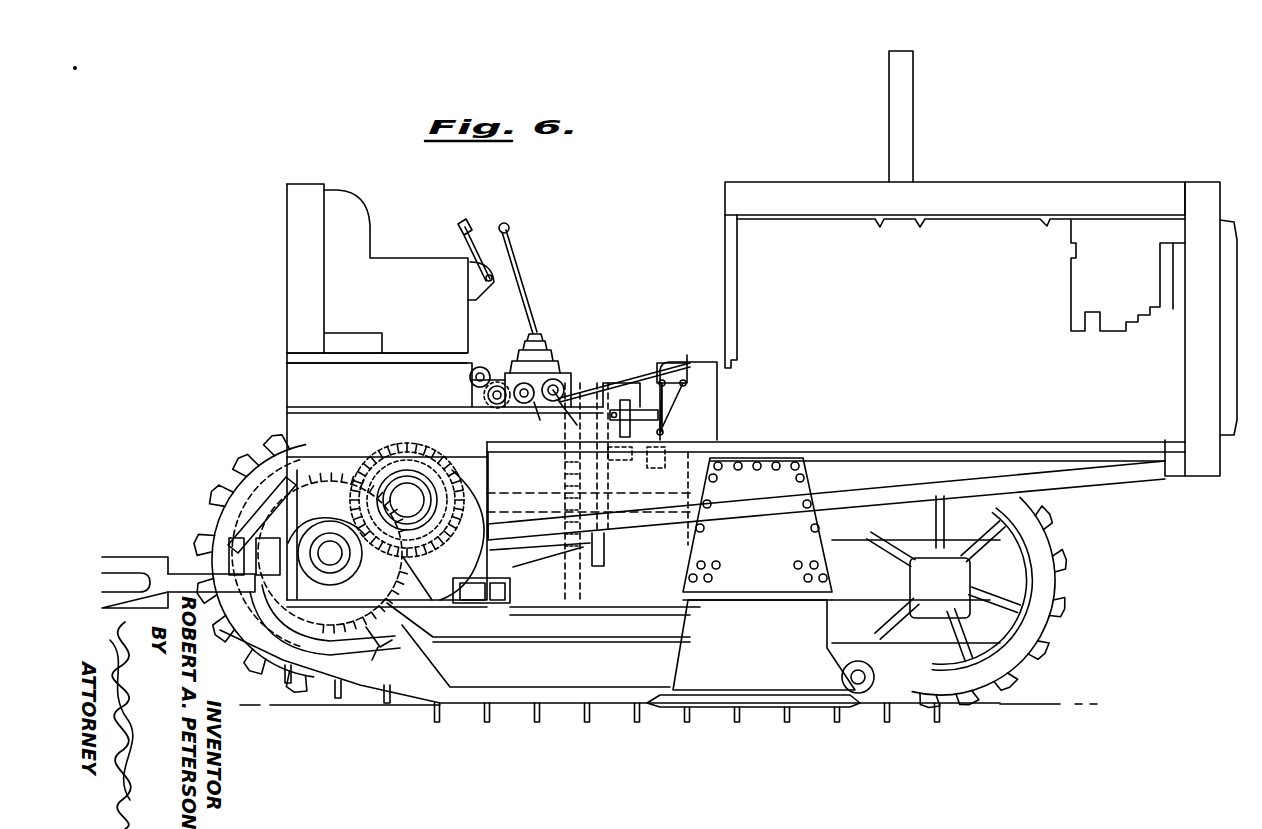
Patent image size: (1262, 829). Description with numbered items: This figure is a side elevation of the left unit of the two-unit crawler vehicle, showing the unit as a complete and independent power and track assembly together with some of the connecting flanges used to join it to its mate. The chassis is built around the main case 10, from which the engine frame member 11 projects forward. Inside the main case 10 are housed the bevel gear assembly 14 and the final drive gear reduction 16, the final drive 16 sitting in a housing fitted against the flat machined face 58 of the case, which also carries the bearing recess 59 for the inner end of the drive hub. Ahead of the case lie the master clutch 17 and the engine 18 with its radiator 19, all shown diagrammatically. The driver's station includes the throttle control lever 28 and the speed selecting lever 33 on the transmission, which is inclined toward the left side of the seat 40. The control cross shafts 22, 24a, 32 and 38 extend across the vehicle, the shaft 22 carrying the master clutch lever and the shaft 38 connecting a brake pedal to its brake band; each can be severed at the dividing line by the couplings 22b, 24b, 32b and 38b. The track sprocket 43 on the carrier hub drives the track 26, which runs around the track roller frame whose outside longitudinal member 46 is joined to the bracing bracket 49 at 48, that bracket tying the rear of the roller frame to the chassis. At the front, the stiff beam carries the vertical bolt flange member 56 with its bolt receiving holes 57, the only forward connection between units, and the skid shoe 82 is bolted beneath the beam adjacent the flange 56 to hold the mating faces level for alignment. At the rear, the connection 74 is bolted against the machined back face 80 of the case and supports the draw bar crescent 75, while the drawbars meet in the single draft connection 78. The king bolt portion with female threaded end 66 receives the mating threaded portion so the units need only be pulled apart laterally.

The main case 10 is at (606, 494).
The engine frame member 11 is at (645, 522).
The bevel gear assembly 14 is at (448, 472).
The final drive gear reduction 16 is at (368, 462).
The master clutch 17 is at (608, 548).
The engine 18 is at (922, 318).
The radiator 19 is at (1200, 190).
The cross shaft 22 is at (520, 405).
The coupling of cross shaft 22 22b is at (538, 407).
The control cross shaft 24a is at (487, 392).
The coupling of cross shaft 24a 24b is at (482, 367).
The track 26 is at (432, 708).
The throttle control lever 28 is at (462, 234).
The control cross shaft 32 is at (566, 388).
The coupling of cross shaft 32 32b is at (560, 384).
The speed selecting lever 33 is at (526, 280).
The cross shaft 38 is at (480, 405).
The coupling of cross shaft 38 38b is at (486, 399).
The seat 40 is at (422, 304).
The track sprocket 43 is at (378, 650).
The box section longitudinal member 46 is at (905, 634).
The bracket securing location 48 is at (508, 600).
The bracing bracket 49 is at (506, 590).
The bolt flange member 56 is at (768, 533).
The bolt receiving holes 57 is at (812, 530).
The machined face 58 is at (402, 574).
The bearing recess 59 is at (322, 530).
The female threaded end 66 is at (330, 556).
The rear connection 74 is at (228, 480).
The draw bar crescent 75 is at (174, 562).
The single draft connection 78 is at (126, 560).
The machined back face 80 is at (286, 470).
The skid shoe 82 is at (772, 649).